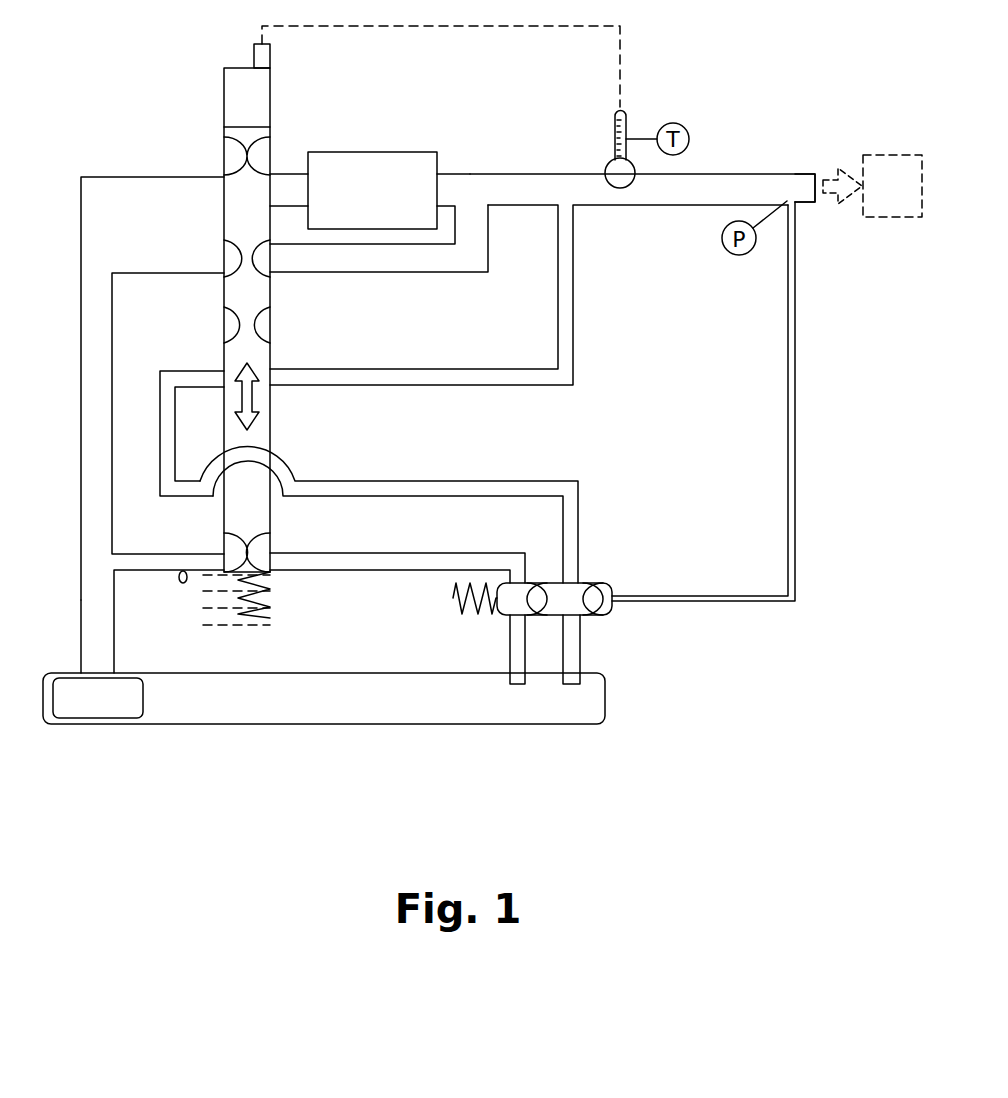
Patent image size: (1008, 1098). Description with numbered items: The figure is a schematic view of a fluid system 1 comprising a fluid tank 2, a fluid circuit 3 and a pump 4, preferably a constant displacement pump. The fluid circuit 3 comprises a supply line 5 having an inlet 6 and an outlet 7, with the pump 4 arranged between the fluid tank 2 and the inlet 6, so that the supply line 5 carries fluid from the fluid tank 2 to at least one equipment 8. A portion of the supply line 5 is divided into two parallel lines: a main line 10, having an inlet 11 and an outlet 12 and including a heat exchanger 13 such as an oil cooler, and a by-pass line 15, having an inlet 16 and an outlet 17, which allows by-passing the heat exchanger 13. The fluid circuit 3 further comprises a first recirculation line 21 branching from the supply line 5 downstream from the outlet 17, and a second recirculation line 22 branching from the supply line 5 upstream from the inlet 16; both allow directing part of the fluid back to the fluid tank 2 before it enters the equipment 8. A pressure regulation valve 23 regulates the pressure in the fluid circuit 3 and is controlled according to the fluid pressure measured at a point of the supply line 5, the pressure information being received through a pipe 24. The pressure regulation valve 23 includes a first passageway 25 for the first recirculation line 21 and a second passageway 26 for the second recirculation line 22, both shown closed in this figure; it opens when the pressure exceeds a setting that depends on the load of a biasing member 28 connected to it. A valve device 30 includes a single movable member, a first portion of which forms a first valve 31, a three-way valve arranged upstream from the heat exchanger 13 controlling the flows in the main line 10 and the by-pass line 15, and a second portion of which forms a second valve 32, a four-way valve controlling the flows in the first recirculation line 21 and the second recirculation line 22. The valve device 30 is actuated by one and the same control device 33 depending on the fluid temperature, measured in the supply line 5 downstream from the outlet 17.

The fluid system 1 is at (707, 718).
The fluid tank 2 is at (352, 722).
The fluid circuit 3 is at (50, 499).
The pump 4 is at (98, 698).
The supply line 5 is at (81, 350).
The inlet 6 is at (96, 668).
The outlet 7 is at (807, 186).
The equipment 8 is at (872, 186).
The main line 10 is at (375, 156).
The inlet 11 is at (288, 180).
The outlet 12 is at (443, 188).
The heat exchanger 13 is at (362, 198).
The by-pass line 15 is at (405, 280).
The inlet 16 is at (275, 258).
The outlet 17 is at (475, 207).
The first recirculation line 21 is at (568, 333).
The second recirculation line 22 is at (328, 570).
The pressure regulation valve 23 is at (535, 586).
The pipe 24 is at (797, 490).
The first passageway 25 is at (593, 585).
The second passageway 26 is at (537, 585).
The biasing member 28 is at (452, 598).
The valve device 30 is at (322, 325).
The first valve 31 is at (235, 235).
The second valve 32 is at (213, 562).
The control device 33 is at (270, 80).